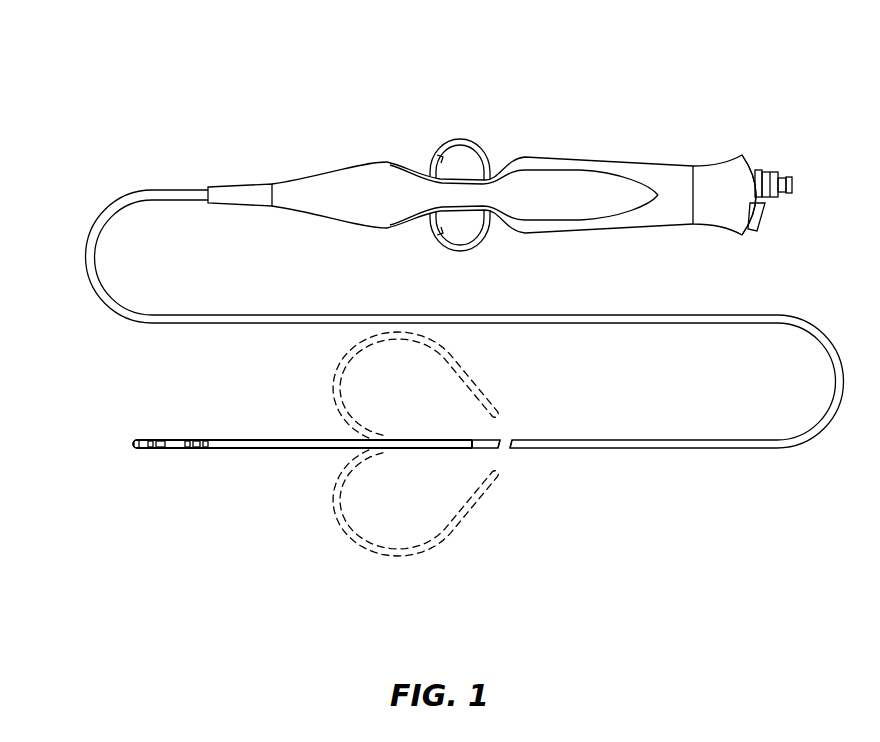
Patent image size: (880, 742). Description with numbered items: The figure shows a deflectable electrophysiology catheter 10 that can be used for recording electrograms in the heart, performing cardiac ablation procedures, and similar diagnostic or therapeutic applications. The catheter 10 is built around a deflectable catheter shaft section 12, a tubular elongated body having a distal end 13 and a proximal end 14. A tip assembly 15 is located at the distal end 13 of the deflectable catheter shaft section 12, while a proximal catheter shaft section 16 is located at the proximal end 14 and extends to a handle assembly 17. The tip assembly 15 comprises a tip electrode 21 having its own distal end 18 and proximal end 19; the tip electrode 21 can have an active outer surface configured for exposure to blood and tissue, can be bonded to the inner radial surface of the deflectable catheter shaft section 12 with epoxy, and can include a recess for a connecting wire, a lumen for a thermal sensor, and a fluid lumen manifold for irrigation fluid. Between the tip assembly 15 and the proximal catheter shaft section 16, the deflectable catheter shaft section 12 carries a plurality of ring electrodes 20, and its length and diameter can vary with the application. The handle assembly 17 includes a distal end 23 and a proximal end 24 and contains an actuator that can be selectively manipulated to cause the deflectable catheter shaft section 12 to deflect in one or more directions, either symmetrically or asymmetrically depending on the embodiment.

The catheter 10 is at (329, 66).
The deflectable catheter shaft section 12 is at (470, 453).
The distal end 13 is at (153, 439).
The proximal end 14 is at (474, 449).
The tip assembly 15 is at (122, 448).
The proximal catheter shaft section 16 is at (723, 456).
The handle assembly 17 is at (620, 144).
The distal end 18 is at (133, 441).
The proximal end 19 is at (138, 440).
The ring electrodes 20 is at (206, 439).
The tip electrode 21 is at (136, 450).
The distal end 23 is at (233, 186).
The proximal end 24 is at (752, 166).